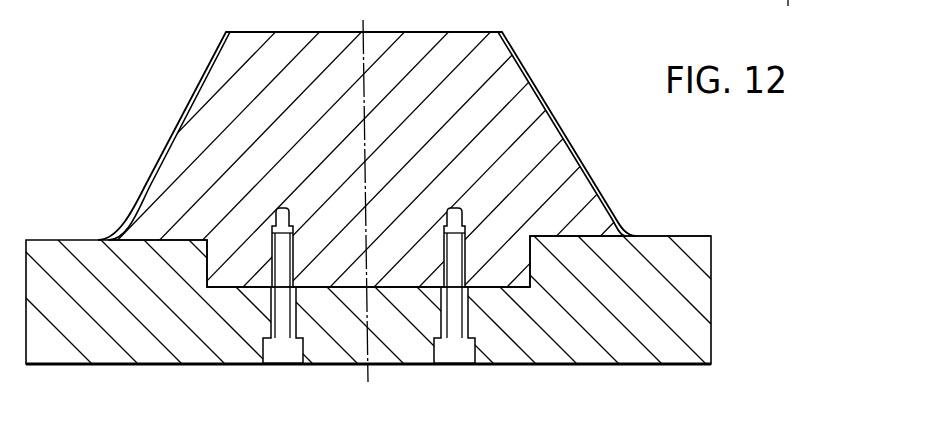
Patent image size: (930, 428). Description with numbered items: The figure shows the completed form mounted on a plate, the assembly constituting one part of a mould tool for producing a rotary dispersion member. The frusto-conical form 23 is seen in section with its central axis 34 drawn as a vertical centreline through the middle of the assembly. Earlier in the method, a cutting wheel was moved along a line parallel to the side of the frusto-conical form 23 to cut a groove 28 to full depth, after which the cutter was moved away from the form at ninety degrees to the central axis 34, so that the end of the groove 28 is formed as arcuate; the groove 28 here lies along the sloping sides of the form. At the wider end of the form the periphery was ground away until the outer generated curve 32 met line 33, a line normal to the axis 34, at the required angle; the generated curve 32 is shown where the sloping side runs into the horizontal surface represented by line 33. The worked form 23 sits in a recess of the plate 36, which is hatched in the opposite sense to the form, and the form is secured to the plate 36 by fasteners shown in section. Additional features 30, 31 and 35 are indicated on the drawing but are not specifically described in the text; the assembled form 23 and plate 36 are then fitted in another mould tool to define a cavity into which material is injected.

The frusto-conical form 23 is at (518, 119).
The groove 28 is at (531, 93).
The fillet radius 30 is at (614, 226).
The interface gap 31 is at (513, 286).
The outer generated curve 32 is at (618, 232).
The line 33 is at (598, 238).
The central axis 34 is at (366, 126).
The direction of movement 35 is at (236, 118).
The plate 36 is at (95, 298).